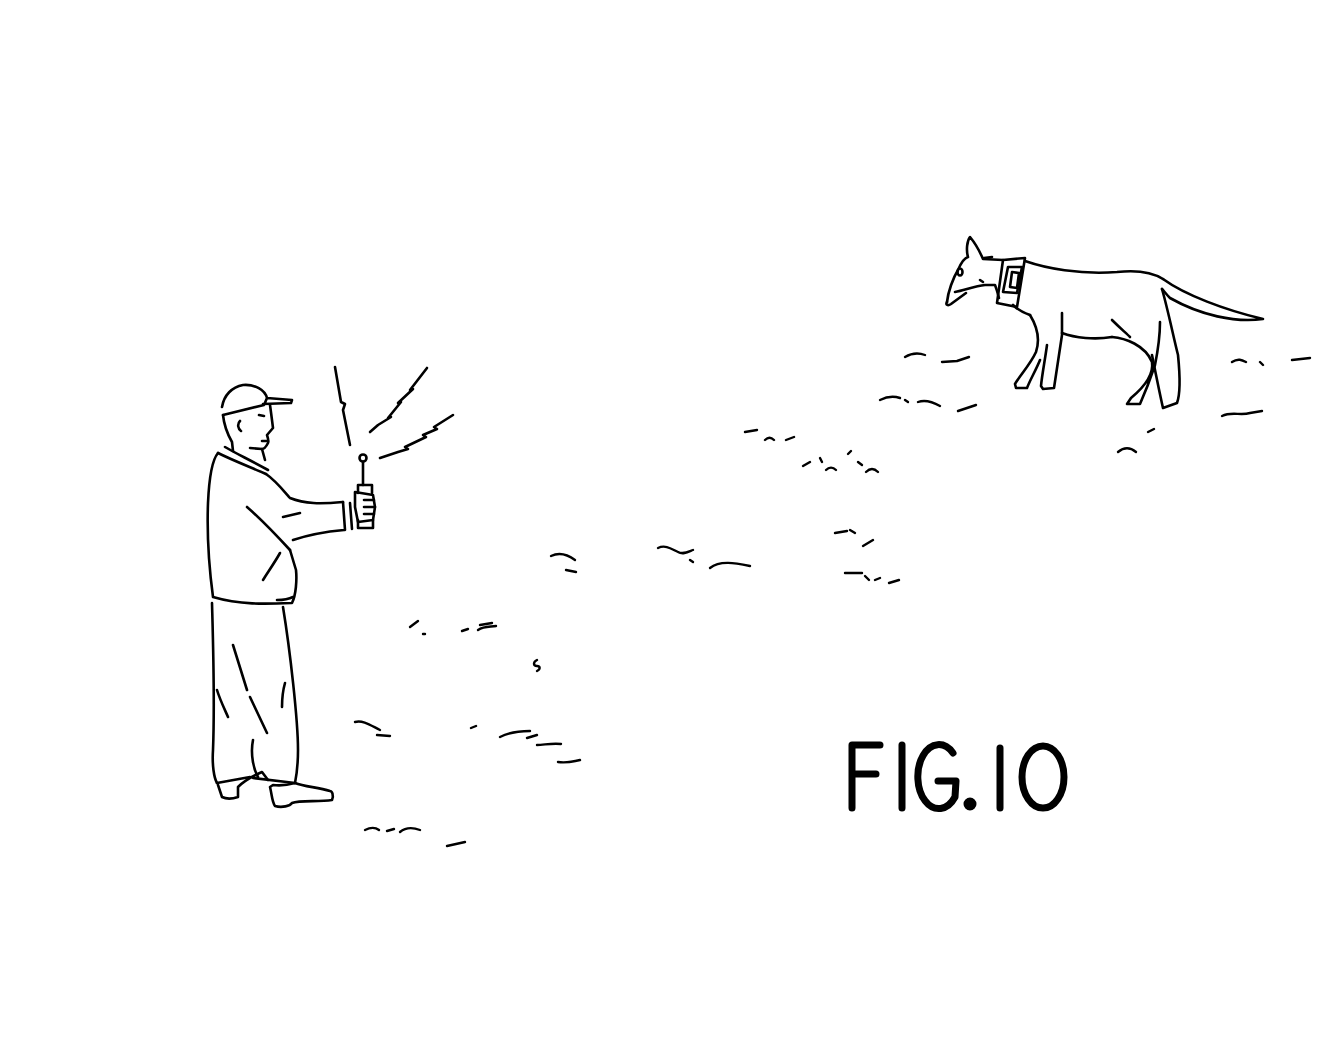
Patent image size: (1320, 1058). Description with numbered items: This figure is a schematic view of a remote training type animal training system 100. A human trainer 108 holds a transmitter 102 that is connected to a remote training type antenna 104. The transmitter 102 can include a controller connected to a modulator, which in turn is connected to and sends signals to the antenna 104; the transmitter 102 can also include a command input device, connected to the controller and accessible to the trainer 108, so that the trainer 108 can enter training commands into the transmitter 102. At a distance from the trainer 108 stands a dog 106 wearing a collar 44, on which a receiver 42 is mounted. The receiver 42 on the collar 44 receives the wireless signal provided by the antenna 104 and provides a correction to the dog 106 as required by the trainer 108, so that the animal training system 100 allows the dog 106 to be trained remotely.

The animal training system 100 is at (786, 229).
The transmitter 102 is at (362, 528).
The antenna 104 is at (366, 477).
The dog 106 is at (1100, 297).
The trainer 108 is at (222, 517).
The receiver 42 is at (995, 295).
The collar 44 is at (1016, 258).